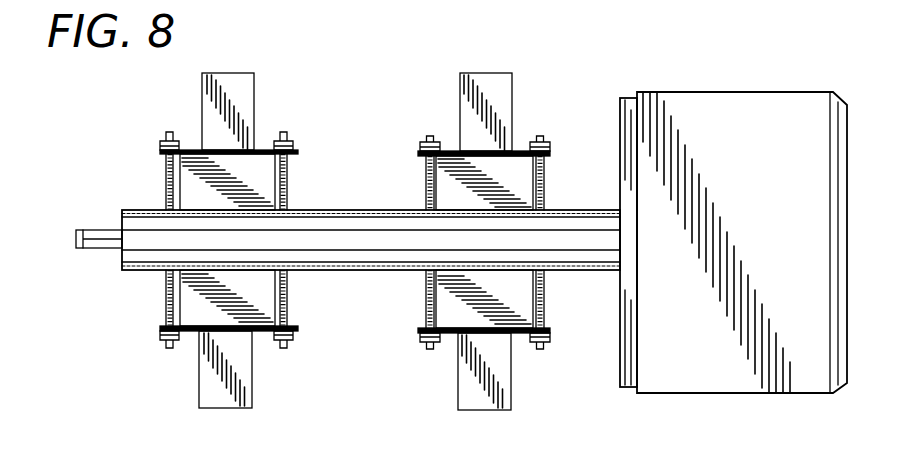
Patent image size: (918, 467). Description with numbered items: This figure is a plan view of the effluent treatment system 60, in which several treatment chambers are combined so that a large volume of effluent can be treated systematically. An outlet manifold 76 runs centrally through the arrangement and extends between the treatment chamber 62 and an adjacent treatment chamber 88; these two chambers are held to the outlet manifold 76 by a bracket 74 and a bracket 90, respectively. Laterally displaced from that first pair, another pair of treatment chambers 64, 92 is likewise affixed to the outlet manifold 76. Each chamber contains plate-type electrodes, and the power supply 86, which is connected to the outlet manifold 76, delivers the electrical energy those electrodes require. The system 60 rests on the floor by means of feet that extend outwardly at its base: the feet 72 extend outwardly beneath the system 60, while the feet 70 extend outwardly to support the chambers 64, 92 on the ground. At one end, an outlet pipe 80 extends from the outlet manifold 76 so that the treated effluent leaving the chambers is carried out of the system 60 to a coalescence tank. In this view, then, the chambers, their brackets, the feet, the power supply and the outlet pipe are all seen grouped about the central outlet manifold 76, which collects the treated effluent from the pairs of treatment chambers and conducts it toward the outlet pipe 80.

The system 60 is at (575, 99).
The treatment chamber 62 is at (520, 283).
The treatment chamber 64 is at (265, 290).
The feet 70 is at (212, 130).
The feet 72 is at (465, 123).
The bracket 74 is at (425, 338).
The outlet manifold 76 is at (395, 225).
The outlet pipe 80 is at (93, 230).
The power supply 86 is at (730, 105).
The treatment chamber 88 is at (524, 193).
The bracket 90 is at (425, 145).
The treatment chamber 92 is at (186, 195).